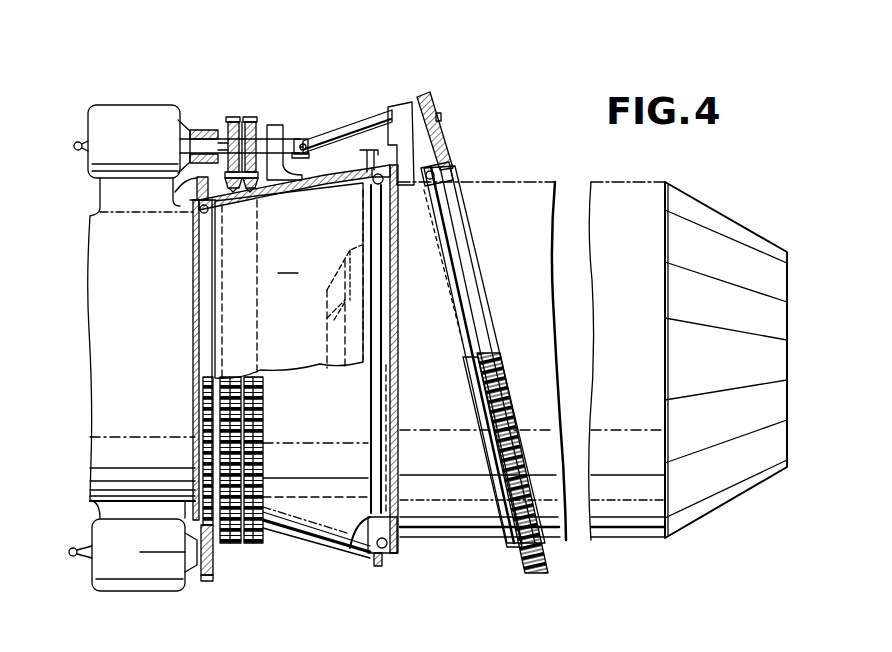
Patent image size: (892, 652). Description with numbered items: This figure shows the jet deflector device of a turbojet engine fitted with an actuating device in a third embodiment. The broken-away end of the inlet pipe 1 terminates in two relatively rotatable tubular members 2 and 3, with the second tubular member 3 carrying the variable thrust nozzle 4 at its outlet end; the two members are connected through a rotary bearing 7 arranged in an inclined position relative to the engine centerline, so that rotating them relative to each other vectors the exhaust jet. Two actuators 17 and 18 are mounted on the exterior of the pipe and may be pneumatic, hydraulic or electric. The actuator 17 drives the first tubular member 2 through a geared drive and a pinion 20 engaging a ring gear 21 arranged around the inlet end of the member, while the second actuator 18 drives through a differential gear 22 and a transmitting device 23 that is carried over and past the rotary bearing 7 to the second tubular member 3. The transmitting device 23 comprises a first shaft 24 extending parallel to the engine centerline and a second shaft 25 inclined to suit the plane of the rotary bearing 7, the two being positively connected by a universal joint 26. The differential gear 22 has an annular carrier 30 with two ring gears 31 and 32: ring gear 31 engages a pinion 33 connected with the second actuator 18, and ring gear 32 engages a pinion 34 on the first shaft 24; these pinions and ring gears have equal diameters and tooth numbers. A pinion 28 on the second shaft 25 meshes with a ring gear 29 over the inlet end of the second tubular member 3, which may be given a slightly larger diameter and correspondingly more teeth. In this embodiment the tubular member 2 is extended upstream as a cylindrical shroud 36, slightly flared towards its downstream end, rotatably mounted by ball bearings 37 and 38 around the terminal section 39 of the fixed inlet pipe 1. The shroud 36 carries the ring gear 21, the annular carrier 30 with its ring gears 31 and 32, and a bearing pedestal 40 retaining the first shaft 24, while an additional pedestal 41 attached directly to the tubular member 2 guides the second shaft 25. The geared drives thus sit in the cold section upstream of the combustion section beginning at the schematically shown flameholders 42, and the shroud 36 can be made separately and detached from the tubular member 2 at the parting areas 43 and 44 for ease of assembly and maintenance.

The inlet pipe 1 is at (110, 407).
The first tubular member 2 is at (450, 530).
The second tubular member 3 is at (580, 532).
The variable thrust nozzle 4 is at (724, 512).
The rotary bearing 7 is at (428, 182).
The actuator 17 is at (118, 572).
The second actuator 18 is at (150, 120).
The pinion 20 is at (207, 582).
The ring gear 21 is at (196, 180).
The differential gear 22 is at (218, 86).
The transmitting device 23 is at (338, 104).
The first shaft 24 is at (294, 142).
The second shaft 25 is at (367, 126).
The universal joint 26 is at (310, 180).
The pinion 28 is at (432, 115).
The ring gear 29 is at (541, 580).
The annular carrier 30 is at (250, 192).
The ring gear 31 is at (228, 548).
The ring gear 32 is at (254, 548).
The pinion 33 is at (226, 118).
The pinion 34 is at (251, 118).
The cylindrical shroud 36 is at (326, 545).
The ball bearing 37 is at (200, 216).
The ball bearing 38 is at (377, 185).
The terminal section 39 is at (289, 280).
The bearing pedestal 40 is at (278, 138).
The pedestal 41 is at (403, 110).
The flameholders 42 is at (324, 322).
The parting area 43 is at (363, 152).
The parting area 44 is at (374, 566).